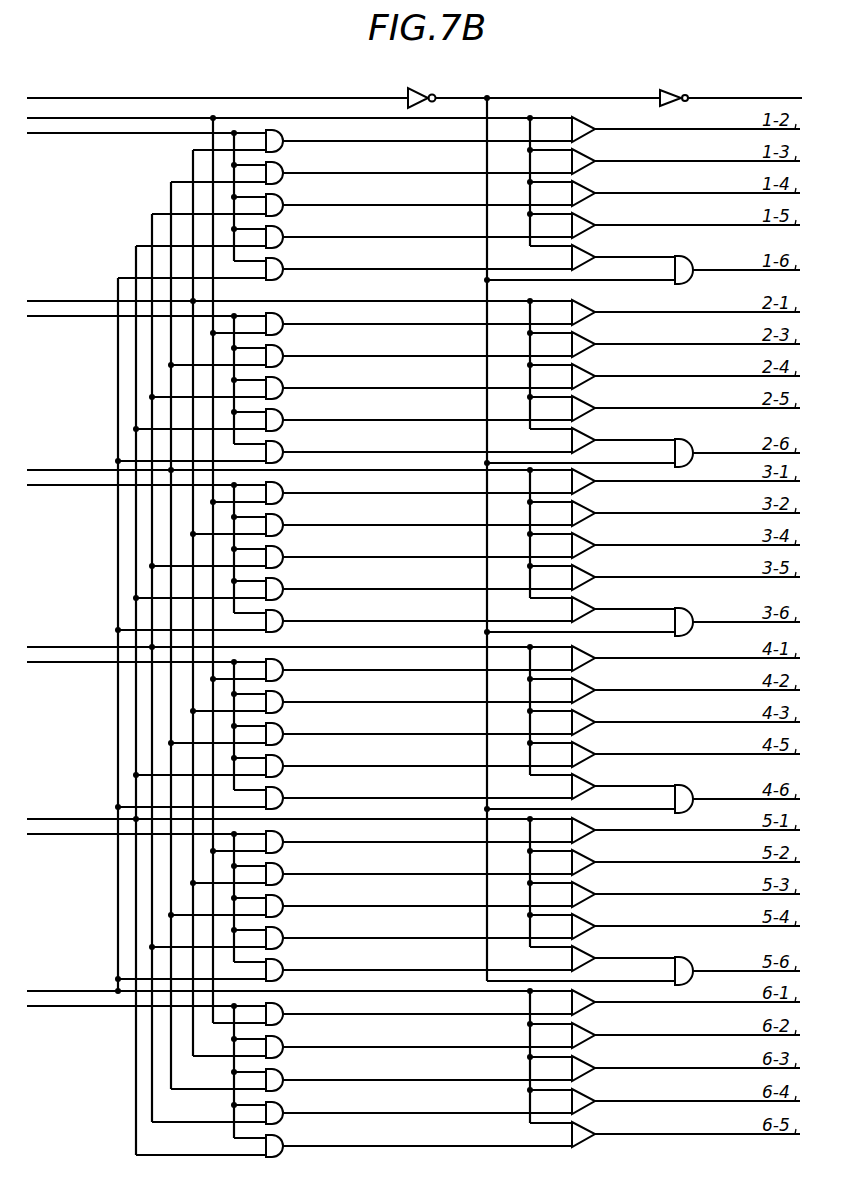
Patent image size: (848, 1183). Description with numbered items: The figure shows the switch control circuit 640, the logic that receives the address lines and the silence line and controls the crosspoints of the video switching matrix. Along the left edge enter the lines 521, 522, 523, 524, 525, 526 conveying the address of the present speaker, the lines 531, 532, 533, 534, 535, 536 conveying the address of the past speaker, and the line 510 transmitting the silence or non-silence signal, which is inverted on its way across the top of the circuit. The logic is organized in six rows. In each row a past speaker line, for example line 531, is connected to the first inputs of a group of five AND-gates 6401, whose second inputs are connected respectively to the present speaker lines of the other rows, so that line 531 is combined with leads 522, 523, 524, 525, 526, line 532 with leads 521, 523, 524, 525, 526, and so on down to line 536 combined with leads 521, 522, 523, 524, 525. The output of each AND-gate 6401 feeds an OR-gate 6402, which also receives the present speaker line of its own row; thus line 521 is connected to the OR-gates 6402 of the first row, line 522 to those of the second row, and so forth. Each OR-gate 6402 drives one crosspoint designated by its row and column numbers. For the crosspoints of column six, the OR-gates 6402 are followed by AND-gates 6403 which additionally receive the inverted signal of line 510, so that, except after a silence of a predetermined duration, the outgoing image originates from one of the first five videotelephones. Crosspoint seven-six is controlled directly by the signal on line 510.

The silence signal line 510 is at (48, 97).
The switch control circuit 640 is at (386, 91).
The present speaker address line 521 is at (212, 142).
The present speaker address line 522 is at (190, 290).
The present speaker address line 523 is at (171, 445).
The present speaker address line 524 is at (152, 613).
The present speaker address line 525 is at (136, 790).
The present speaker address line 526 is at (118, 967).
The past speaker address line 531 is at (82, 134).
The past speaker address line 532 is at (81, 317).
The past speaker address line 533 is at (86, 486).
The past speaker address line 534 is at (84, 663).
The past speaker address line 535 is at (81, 835).
The past speaker address line 536 is at (89, 1007).
The AND-gates 6401 is at (288, 1133).
The OR-gates 6402 is at (590, 1127).
The output AND-gates 6403 is at (691, 953).